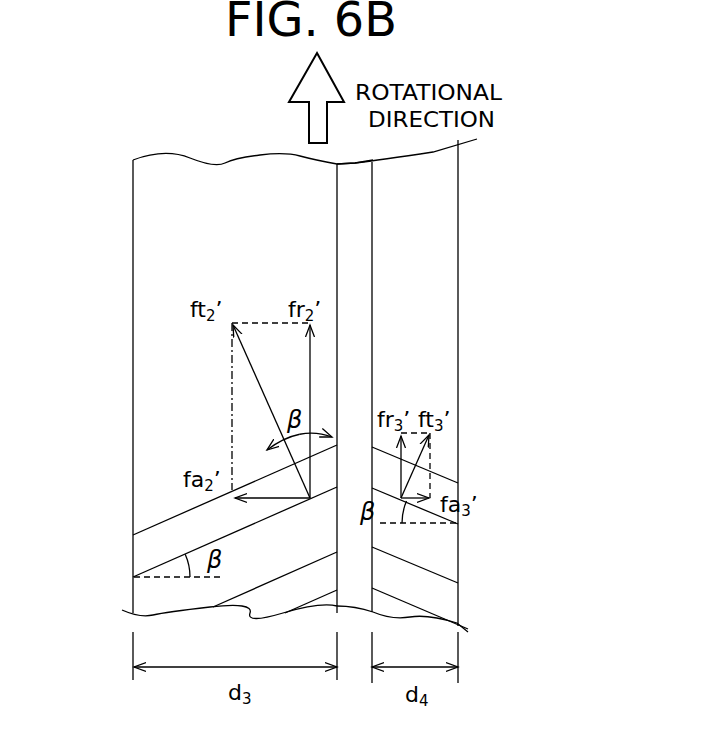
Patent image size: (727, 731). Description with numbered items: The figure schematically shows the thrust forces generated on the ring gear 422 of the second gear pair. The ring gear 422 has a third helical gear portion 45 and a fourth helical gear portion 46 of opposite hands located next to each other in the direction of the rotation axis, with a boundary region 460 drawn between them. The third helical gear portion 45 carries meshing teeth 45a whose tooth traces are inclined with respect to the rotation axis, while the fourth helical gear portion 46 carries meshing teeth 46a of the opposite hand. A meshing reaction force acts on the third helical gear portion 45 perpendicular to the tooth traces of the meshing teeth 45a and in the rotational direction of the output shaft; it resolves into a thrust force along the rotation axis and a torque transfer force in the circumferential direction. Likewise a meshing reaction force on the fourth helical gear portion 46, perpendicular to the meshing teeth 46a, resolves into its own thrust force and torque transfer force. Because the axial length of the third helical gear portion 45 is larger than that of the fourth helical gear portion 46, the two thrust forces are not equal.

The ring gear 422 is at (480, 162).
The third helical gear portion 45 is at (134, 305).
The meshing teeth 45a is at (260, 603).
The fourth helical gear portion 46 is at (458, 302).
The meshing teeth 46a is at (447, 600).
The gap between fins 460 is at (355, 235).